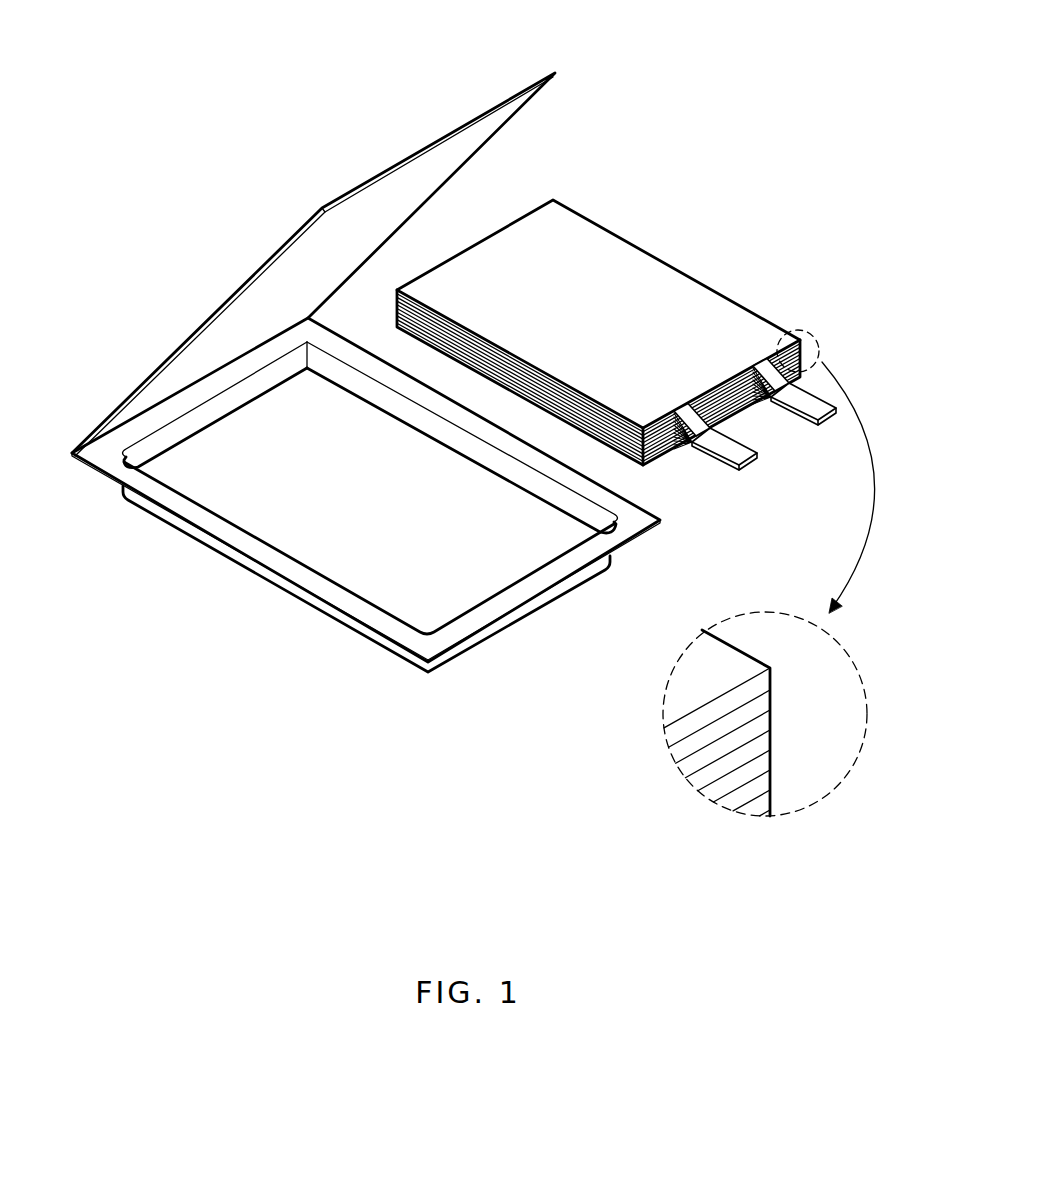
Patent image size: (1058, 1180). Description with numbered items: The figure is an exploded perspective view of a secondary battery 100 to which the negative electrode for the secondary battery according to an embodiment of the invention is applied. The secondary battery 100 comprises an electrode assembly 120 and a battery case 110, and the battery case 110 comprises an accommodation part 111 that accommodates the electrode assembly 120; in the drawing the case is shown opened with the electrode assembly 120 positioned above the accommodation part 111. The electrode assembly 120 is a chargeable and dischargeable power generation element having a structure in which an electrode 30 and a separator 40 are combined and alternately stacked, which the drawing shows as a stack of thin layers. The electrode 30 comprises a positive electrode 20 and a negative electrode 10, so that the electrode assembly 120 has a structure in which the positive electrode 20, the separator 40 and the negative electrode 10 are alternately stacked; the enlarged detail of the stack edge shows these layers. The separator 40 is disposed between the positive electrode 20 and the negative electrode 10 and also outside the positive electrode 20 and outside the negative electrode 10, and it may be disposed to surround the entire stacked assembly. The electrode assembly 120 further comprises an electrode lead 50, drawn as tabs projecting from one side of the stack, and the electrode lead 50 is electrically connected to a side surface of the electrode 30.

The secondary battery 100 is at (473, 417).
The battery case 110 is at (366, 400).
The accommodation part 111 is at (407, 577).
The electrode assembly 120 is at (616, 323).
The electrode lead 50 is at (805, 413).
The separator 40 is at (708, 716).
The electrode 30 is at (642, 723).
The positive electrode 20 is at (682, 754).
The negative electrode 10 is at (695, 778).